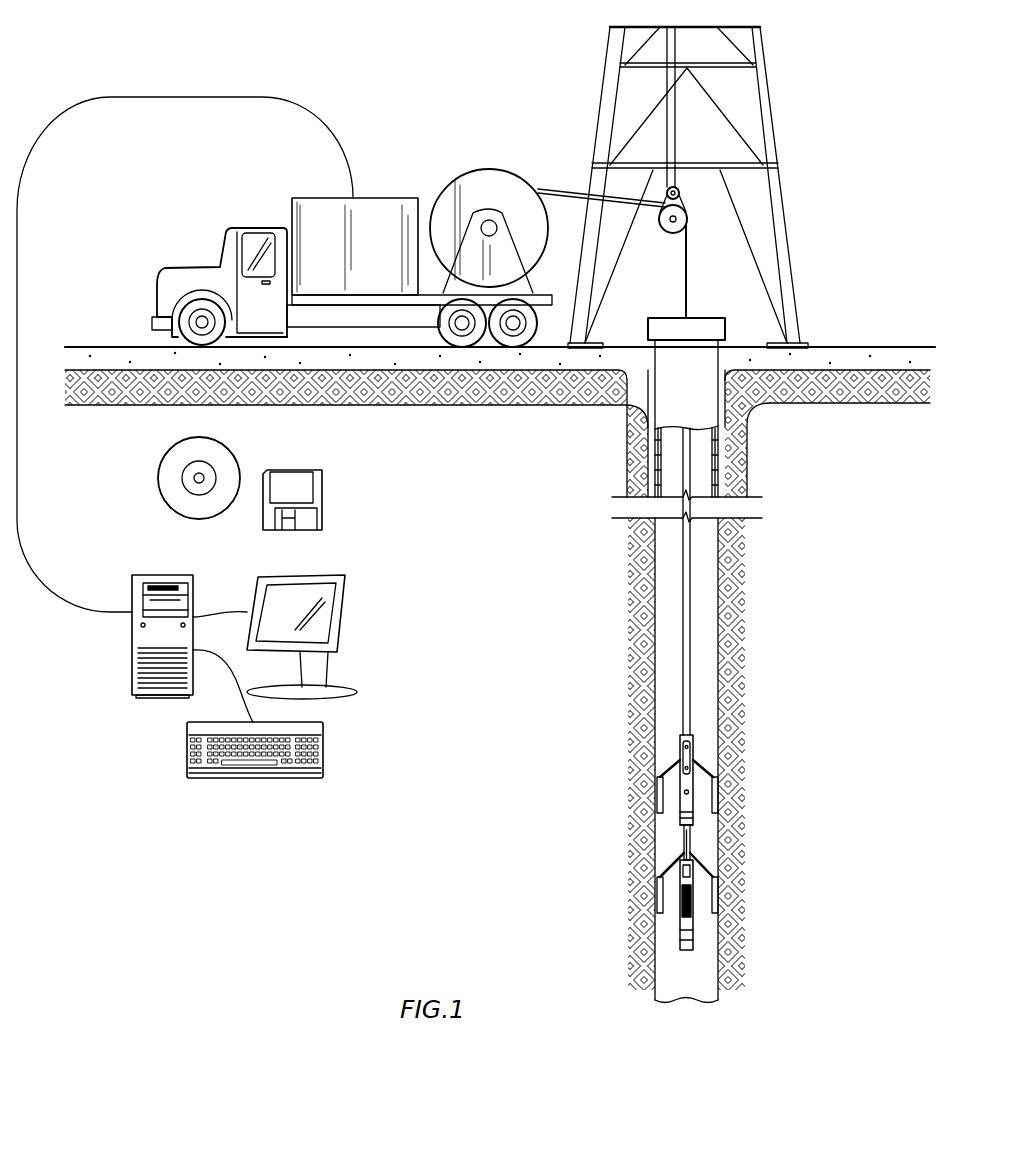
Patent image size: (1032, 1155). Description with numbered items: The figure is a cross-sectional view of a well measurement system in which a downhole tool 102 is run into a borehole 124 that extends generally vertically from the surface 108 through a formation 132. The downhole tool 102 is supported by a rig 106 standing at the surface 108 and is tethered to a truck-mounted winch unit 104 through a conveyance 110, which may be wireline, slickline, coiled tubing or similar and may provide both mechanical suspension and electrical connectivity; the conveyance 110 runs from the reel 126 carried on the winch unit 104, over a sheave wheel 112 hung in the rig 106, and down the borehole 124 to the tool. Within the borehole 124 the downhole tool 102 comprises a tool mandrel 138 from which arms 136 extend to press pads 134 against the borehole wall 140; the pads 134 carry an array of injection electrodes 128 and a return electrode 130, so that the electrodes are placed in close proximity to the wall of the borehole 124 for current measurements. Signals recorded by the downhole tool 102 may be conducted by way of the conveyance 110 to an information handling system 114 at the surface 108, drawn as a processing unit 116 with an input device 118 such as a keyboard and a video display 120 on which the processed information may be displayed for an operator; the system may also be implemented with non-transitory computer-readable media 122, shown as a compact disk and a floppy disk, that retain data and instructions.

The downhole tool 102 is at (702, 837).
The winch unit 104 is at (295, 197).
The rig 106 is at (772, 105).
The surface 108 is at (835, 346).
The conveyance 110 is at (683, 558).
The sheave wheel 112 is at (660, 230).
The information handling system 114 is at (269, 638).
The processing unit 116 is at (150, 575).
The input device 118 is at (323, 747).
The video display 120 is at (340, 617).
The non-transitory computer-readable media 122 is at (233, 448).
The borehole 124 is at (723, 467).
The cable reel 126 is at (495, 170).
The injection electrode 128 is at (722, 880).
The return electrode 130 is at (722, 903).
The formation 132 is at (852, 597).
The pad 134 is at (723, 783).
The arm 136 is at (720, 855).
The tool mandrel 138 is at (693, 848).
The borehole wall 140 is at (723, 657).